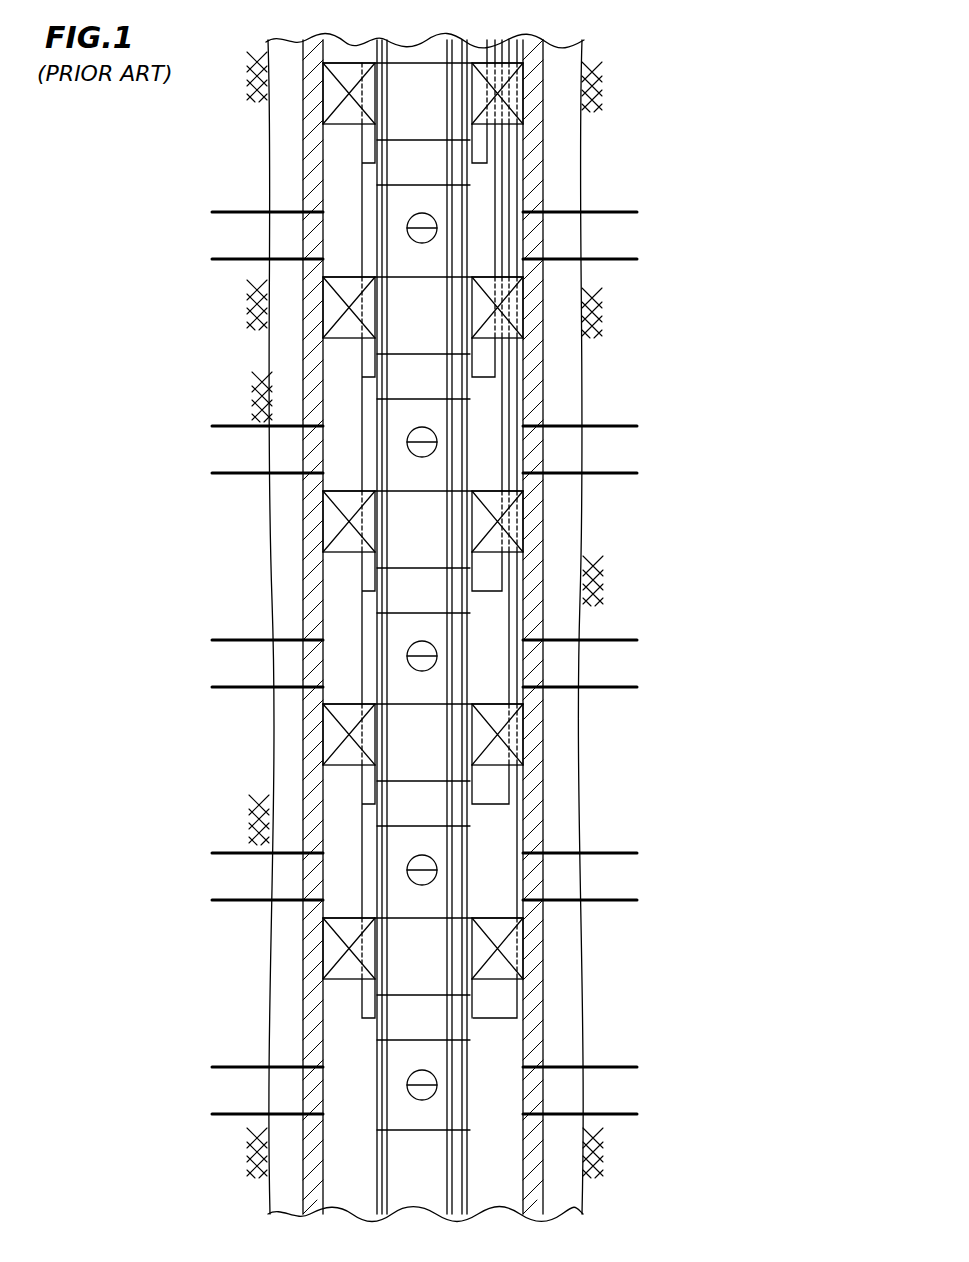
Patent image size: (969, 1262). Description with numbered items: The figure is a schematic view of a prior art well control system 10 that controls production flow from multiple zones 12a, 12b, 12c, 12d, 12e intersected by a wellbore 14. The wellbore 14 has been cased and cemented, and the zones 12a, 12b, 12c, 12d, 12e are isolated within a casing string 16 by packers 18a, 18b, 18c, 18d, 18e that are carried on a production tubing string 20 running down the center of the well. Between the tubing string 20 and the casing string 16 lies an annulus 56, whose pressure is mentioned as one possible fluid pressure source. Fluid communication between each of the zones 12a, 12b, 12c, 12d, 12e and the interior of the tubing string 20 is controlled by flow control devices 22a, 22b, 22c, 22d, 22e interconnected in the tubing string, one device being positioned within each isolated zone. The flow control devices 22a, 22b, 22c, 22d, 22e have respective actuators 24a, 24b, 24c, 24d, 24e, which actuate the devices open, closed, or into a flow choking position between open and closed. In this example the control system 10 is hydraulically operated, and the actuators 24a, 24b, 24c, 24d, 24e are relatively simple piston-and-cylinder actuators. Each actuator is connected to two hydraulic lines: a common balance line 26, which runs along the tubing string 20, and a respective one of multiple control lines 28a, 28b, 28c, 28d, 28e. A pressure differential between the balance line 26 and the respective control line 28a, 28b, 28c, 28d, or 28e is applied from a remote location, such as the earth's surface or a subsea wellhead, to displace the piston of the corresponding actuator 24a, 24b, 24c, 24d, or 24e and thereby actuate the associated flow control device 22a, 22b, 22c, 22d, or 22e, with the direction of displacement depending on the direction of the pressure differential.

The control system 10 is at (722, 68).
The zone 12a is at (620, 232).
The zone 12b is at (620, 447).
The zone 12c is at (620, 660).
The zone 12d is at (620, 873).
The zone 12e is at (620, 1087).
The wellbore 14 is at (270, 922).
The casing string 16 is at (300, 291).
The packer 18a is at (328, 94).
The packer 18b is at (325, 310).
The packer 18c is at (325, 520).
The packer 18d is at (325, 737).
The packer 18e is at (325, 957).
The production tubing string 20 is at (375, 48).
The flow control device 22a is at (377, 233).
The flow control device 22b is at (377, 447).
The flow control device 22c is at (377, 661).
The flow control device 22d is at (377, 872).
The flow control device 22e is at (377, 1086).
The actuator 24a is at (440, 140).
The actuator 24b is at (440, 354).
The actuator 24c is at (440, 568).
The actuator 24d is at (440, 781).
The actuator 24e is at (440, 995).
The balance line 26 is at (358, 178).
The control line 28a is at (487, 147).
The control line 28b is at (495, 362).
The control line 28c is at (502, 575).
The control line 28d is at (509, 790).
The control line 28e is at (517, 1000).
The annulus 56 is at (507, 1047).